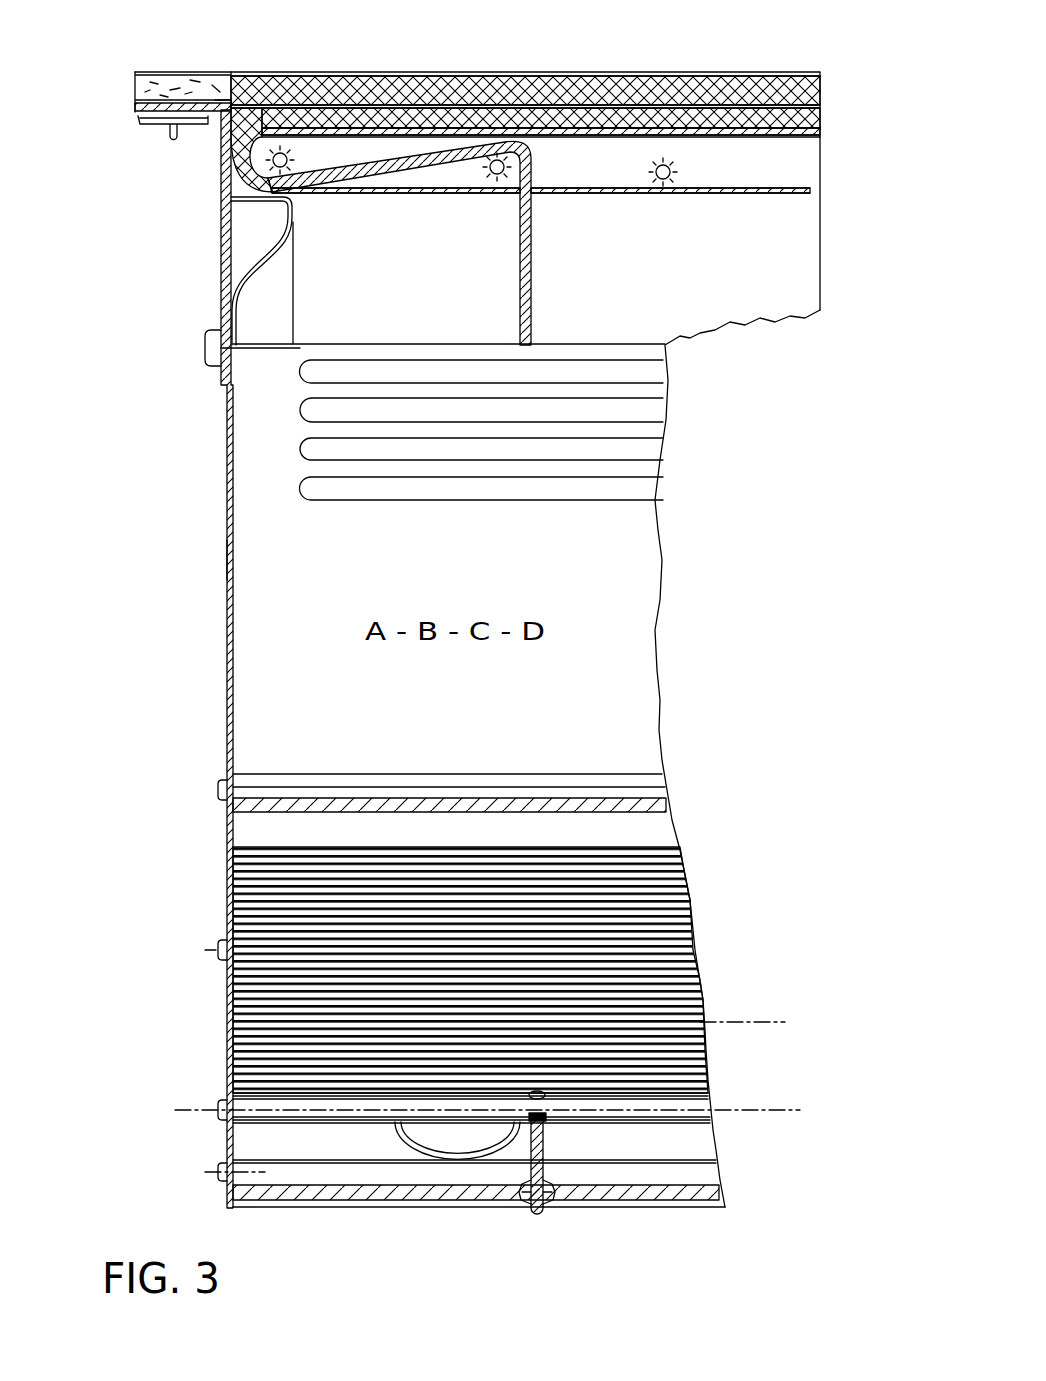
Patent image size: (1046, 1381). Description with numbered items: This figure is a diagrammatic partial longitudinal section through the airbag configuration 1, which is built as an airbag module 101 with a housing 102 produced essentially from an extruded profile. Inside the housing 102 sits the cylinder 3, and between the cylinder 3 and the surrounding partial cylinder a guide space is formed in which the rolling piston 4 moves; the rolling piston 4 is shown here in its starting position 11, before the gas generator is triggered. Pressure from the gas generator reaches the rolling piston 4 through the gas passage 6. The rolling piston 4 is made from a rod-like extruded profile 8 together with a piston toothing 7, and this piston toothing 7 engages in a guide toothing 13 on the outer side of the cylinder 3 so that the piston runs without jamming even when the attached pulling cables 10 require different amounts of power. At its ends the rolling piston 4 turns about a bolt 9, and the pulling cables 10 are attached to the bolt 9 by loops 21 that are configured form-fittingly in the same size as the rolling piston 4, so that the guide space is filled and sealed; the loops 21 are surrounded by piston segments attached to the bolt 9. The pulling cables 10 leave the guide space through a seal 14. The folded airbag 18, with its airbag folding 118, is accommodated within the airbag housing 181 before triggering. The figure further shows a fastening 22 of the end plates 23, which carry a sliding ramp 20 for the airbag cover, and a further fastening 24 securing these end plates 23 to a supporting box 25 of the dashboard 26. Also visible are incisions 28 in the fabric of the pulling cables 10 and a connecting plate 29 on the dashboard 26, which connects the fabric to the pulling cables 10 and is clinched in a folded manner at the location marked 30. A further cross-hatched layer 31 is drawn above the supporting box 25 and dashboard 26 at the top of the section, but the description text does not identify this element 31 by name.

The airbag configuration 1 is at (198, 523).
The cylinder 3 is at (456, 846).
The rolling piston 4 is at (695, 1110).
The gas passage 6 is at (438, 1153).
The piston toothing 7 is at (684, 1080).
The extruded profile 8 is at (226, 1103).
The bolt 9 is at (224, 1121).
The pulling cables 10 is at (525, 258).
The starting position 11 is at (735, 1141).
The guide toothing 13 is at (656, 955).
The seal 14 is at (550, 1201).
The airbag 18 is at (636, 423).
The sliding ramp 20 is at (271, 259).
The loops 21 is at (546, 1120).
The fastening 22 is at (221, 789).
The end plates 23 is at (229, 558).
The fastening 24 is at (205, 343).
The supporting box 25 is at (220, 178).
The dashboard 26 is at (205, 88).
The incisions 28 is at (250, 82).
The connecting plate 29 is at (758, 162).
The clinched fold 30 is at (664, 174).
The insulation 31 is at (497, 90).
The airbag module 101 is at (650, 776).
The housing 102 is at (217, 681).
The airbag folding 118 is at (532, 466).
The airbag housing 181 is at (570, 732).